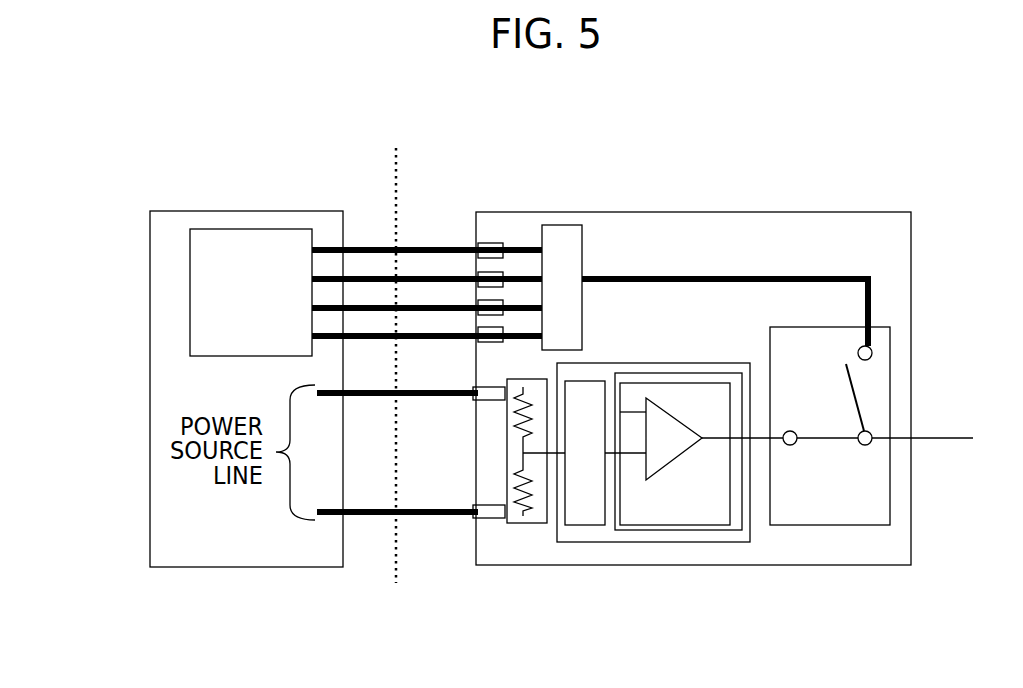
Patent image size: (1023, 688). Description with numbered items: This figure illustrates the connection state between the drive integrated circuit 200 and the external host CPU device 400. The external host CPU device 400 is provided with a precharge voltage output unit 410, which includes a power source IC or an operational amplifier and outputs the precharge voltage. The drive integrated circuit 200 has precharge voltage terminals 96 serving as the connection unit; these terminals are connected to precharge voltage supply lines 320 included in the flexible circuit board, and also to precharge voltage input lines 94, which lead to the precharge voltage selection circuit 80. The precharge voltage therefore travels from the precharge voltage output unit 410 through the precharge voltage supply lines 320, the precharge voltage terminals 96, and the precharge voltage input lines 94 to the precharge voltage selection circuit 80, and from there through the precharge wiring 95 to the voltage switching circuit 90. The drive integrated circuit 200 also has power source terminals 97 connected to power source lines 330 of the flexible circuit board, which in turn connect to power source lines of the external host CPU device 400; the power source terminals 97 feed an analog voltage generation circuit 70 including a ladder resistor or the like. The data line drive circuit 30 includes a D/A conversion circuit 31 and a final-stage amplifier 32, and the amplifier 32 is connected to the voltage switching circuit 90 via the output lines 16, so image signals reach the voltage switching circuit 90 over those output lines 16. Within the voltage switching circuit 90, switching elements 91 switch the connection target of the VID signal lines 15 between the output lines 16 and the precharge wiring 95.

The VID signal lines 15 is at (940, 443).
The output lines 16 is at (757, 441).
The data line drive circuit 30 is at (626, 543).
The D/A conversion circuit 31 is at (575, 526).
The final-stage amplifier 32 is at (695, 531).
The analog voltage generation circuit 70 is at (516, 524).
The precharge voltage selection circuit 80 is at (563, 225).
The voltage switching circuit 90 is at (852, 527).
The switching elements 91 is at (878, 403).
The precharge voltage input lines 94 is at (528, 333).
The precharge wiring 95 is at (735, 276).
The precharge voltage terminals 96 is at (493, 327).
The power source terminals 97 is at (482, 401).
The drive integrated circuit 200 is at (915, 236).
The precharge voltage supply lines 320 is at (442, 330).
The power source lines 330 is at (415, 398).
The external host CPU device 400 is at (305, 211).
The precharge voltage output unit 410 is at (240, 229).